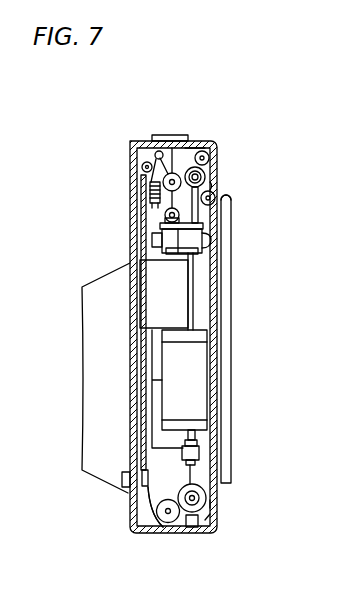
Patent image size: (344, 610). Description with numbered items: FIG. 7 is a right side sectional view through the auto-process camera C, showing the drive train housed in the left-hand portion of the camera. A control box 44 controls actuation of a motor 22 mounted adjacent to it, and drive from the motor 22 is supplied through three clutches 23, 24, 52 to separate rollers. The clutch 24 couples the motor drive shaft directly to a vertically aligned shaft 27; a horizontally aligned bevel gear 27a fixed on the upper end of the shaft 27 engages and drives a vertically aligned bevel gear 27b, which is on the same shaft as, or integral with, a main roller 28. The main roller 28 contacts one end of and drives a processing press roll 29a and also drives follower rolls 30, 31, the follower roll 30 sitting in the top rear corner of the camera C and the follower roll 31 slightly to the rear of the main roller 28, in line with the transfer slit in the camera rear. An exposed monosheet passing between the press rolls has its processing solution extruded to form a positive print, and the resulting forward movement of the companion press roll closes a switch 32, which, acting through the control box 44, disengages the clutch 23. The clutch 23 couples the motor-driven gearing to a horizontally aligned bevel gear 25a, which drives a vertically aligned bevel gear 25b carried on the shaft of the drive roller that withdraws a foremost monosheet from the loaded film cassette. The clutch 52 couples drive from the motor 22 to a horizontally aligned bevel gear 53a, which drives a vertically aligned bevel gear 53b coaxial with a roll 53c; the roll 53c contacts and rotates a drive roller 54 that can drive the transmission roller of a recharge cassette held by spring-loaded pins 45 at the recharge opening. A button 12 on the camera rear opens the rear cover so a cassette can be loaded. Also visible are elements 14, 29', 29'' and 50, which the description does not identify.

The button 12 is at (124, 481).
The cover plate 14 is at (233, 313).
The motor 22 is at (200, 363).
The clutch 23 is at (152, 240).
The clutch 24 is at (210, 243).
The horizontally aligned bevel gear 25a is at (166, 213).
The vertically aligned bevel gear 25b is at (163, 217).
The vertically aligned shaft 27 is at (214, 219).
The horizontally aligned bevel gear 27a is at (215, 194).
The vertically aligned bevel gear 27b is at (195, 140).
The main roller 28 is at (206, 176).
The pivot pin 29' is at (115, 142).
The pivot lever 29'' is at (145, 122).
The processing press roll 29a is at (173, 147).
The follower roll 30 is at (205, 156).
The follower roll 31 is at (228, 198).
The switch 32 is at (152, 188).
The control box 44 is at (178, 277).
The spring-loaded pins 45 is at (215, 518).
The take-up reel 50 is at (144, 534).
The clutch 52 is at (200, 450).
The horizontally aligned bevel gear 53a is at (213, 492).
The vertically aligned bevel gear 53b is at (214, 504).
The roll 53c is at (180, 493).
The drive roller 54 is at (175, 533).
The auto-process camera C is at (97, 277).